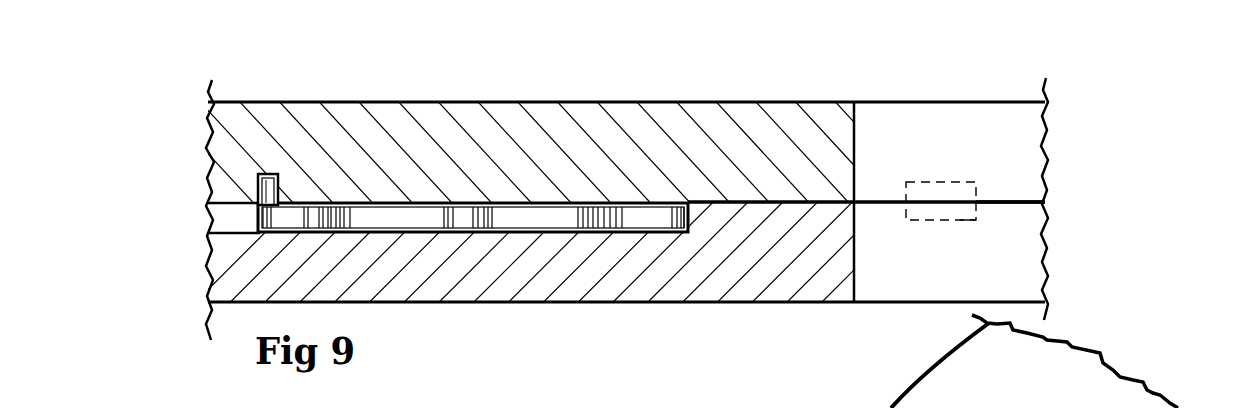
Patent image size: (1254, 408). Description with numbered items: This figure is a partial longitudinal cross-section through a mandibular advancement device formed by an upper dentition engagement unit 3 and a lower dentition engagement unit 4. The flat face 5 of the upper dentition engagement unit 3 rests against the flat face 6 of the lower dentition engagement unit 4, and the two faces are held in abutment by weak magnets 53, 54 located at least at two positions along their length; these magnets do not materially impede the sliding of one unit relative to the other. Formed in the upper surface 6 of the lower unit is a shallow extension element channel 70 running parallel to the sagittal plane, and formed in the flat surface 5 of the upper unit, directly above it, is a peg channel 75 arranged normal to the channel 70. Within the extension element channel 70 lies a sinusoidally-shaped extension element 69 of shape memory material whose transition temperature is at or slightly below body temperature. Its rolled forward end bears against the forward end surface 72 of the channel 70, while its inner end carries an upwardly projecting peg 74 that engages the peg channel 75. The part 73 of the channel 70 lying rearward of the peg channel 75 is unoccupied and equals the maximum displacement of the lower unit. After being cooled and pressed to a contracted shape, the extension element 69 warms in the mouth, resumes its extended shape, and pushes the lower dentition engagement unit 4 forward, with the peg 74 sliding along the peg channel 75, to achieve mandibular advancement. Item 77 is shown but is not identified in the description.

The upper dentition engagement unit 3 is at (617, 172).
The lower dentition engagement unit 4 is at (667, 271).
The flat face of upper dentition engagement unit 5 is at (1085, 191).
The flat face of lower dentition engagement unit 6 is at (850, 297).
The weak magnet 53 is at (1056, 152).
The weak magnet 54 is at (1085, 260).
The extension element 69 is at (497, 287).
The extension element channel 70 is at (626, 136).
The forward end surface of extension element channel 72 is at (767, 287).
The unoccupied part of extension element channel 73 is at (177, 270).
The peg 74 is at (191, 166).
The peg channel 75 is at (245, 118).
The cable / strip 77 is at (1063, 361).